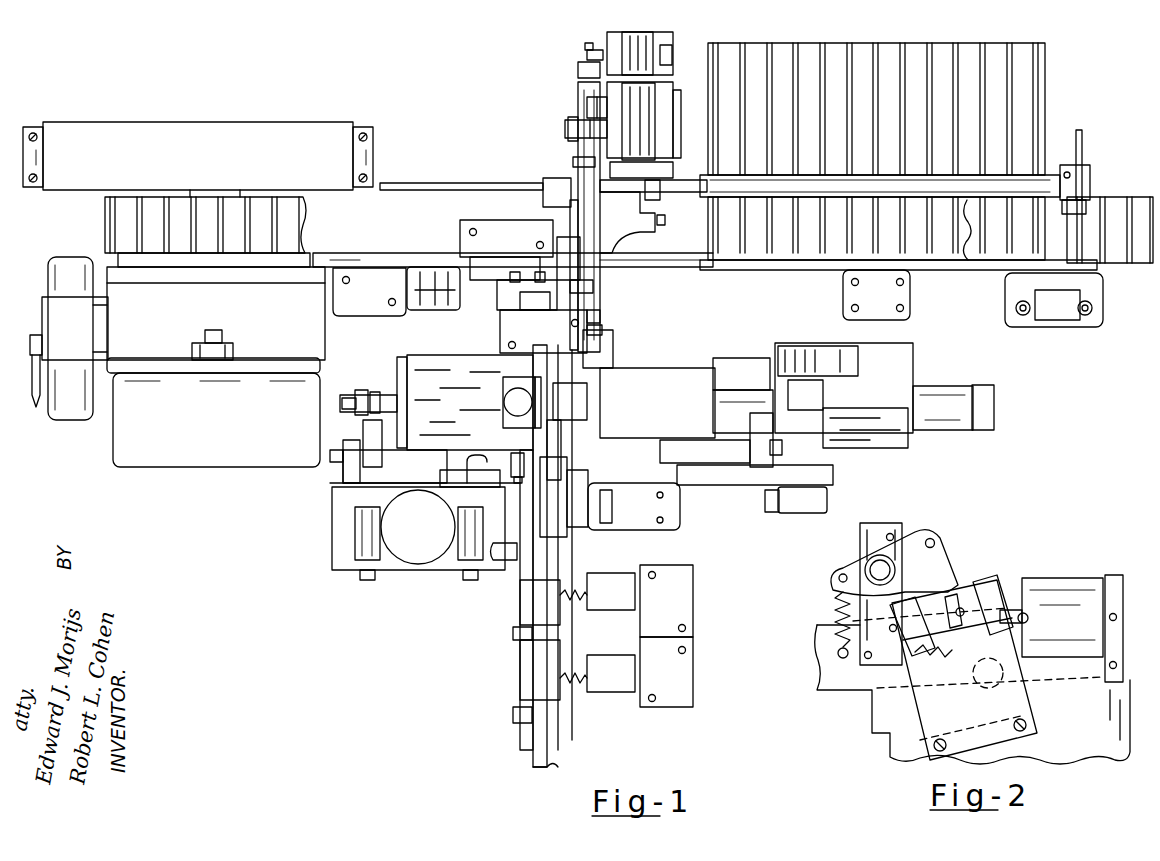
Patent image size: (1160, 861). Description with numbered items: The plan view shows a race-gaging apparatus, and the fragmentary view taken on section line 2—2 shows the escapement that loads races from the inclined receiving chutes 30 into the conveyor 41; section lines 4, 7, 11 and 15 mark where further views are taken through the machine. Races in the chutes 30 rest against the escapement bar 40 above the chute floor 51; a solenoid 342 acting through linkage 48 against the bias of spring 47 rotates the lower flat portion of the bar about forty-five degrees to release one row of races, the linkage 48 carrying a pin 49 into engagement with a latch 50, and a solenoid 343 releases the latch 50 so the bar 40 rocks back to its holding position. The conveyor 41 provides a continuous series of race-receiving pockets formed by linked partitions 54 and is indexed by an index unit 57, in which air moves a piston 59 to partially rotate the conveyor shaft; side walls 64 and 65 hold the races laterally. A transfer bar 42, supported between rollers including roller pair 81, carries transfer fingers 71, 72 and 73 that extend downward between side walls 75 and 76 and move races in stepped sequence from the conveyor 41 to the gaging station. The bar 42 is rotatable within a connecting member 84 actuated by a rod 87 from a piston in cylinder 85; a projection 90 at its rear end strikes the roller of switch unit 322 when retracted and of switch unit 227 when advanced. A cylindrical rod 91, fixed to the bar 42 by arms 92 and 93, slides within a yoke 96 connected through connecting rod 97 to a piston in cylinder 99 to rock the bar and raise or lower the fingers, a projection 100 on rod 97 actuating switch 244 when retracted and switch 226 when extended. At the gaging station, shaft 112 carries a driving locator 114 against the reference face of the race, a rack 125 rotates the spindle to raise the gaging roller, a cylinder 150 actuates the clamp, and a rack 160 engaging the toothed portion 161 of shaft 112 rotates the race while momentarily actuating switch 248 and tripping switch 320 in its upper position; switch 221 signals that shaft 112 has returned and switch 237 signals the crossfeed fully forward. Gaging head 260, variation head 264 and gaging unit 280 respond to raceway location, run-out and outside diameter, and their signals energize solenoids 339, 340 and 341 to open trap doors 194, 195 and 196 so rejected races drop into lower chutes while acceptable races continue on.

In FIG. 1, the conveyor 41 is at (85, 230).
In FIG. 1, the section line 4- 4 is at (217, 172).
In FIG. 1, the partitions 54 is at (125, 210).
In FIG. 1, the index unit 57 is at (277, 322).
In FIG. 1, the piston 59 is at (90, 339).
In FIG. 1, the section line 15- 15 is at (337, 401).
In FIG. 1, the cylindrical rod 91 is at (580, 190).
In FIG. 1, the switch unit 322 is at (613, 52).
In FIG. 1, the projection 90 is at (578, 68).
In FIG. 1, the cylinder 85 is at (662, 147).
In FIG. 1, the switch unit 227 is at (585, 108).
In FIG. 1, the roller pair 81 is at (565, 127).
In FIG. 1, the arm 93 is at (573, 160).
In FIG. 1, the transfer finger 71 is at (543, 190).
In FIG. 1, the side wall 64 is at (420, 192).
In FIG. 1, the rod 87 is at (655, 190).
In FIG. 1, the connecting member 84 is at (618, 212).
In FIG. 1, the transfer finger 72 is at (570, 265).
In FIG. 1, the switch 244 is at (490, 266).
In FIG. 1, the cylinder 99 is at (410, 300).
In FIG. 1, the switch 226 is at (500, 295).
In FIG. 1, the connecting rod 97 is at (553, 300).
In FIG. 1, the projection 100 is at (537, 302).
In FIG. 1, the yoke 96 is at (593, 287).
In FIG. 1, the section line 11- 11 is at (641, 270).
In FIG. 1, the side wall 65 is at (745, 258).
In FIG. 1, the arm 92 is at (600, 317).
In FIG. 1, the transfer bar 42 is at (603, 333).
In FIG. 1, the transfer finger 73 is at (612, 350).
In FIG. 1, the cylinder 150 is at (507, 400).
In FIG. 1, the driving locator 114 is at (535, 377).
In FIG. 1, the shaft 112 is at (572, 402).
In FIG. 1, the side wall 75 is at (560, 440).
In FIG. 1, the side wall 76 is at (520, 477).
In FIG. 1, the rack 125 is at (365, 425).
In FIG. 1, the gaging head 260 is at (357, 548).
In FIG. 1, the variation head 264 is at (422, 555).
In FIG. 1, the gaging unit 280 is at (472, 560).
In FIG. 1, the trap door 194 is at (530, 555).
In FIG. 1, the trap door 195 is at (540, 640).
In FIG. 1, the trap door 196 is at (540, 692).
In FIG. 1, the solenoid 339 is at (602, 526).
In FIG. 1, the solenoid 340 is at (612, 610).
In FIG. 1, the solenoid 341 is at (625, 695).
In FIG. 1, the section line 7- 7 is at (693, 135).
In FIG. 1, the switch 320 is at (725, 370).
In FIG. 1, the extended toothed portion 161 is at (737, 398).
In FIG. 1, the switch 237 is at (830, 380).
In FIG. 1, the switch 221 is at (888, 425).
In FIG. 1, the rack 160 is at (763, 430).
In FIG. 1, the switch 248 is at (830, 495).
In FIG. 1, the latch 50 is at (943, 63).
In FIG. 2, the latch 50 is at (990, 590).
In FIG. 1, the escapement bar 40 is at (895, 172).
In FIG. 2, the escapement bar 40 is at (878, 577).
In FIG. 1, the section line 2- 2 is at (1115, 37).
In FIG. 1, the inclined receiving chutes 30 is at (1052, 108).
In FIG. 2, the inclined receiving chutes 30 is at (1005, 584).
In FIG. 2, the spring 47 is at (838, 600).
In FIG. 2, the solenoid 342 is at (970, 716).
In FIG. 2, the pin 49 is at (921, 615).
In FIG. 2, the linkage 48 is at (950, 595).
In FIG. 2, the solenoid 343 is at (1043, 590).
In FIG. 2, the floor 51 is at (900, 683).